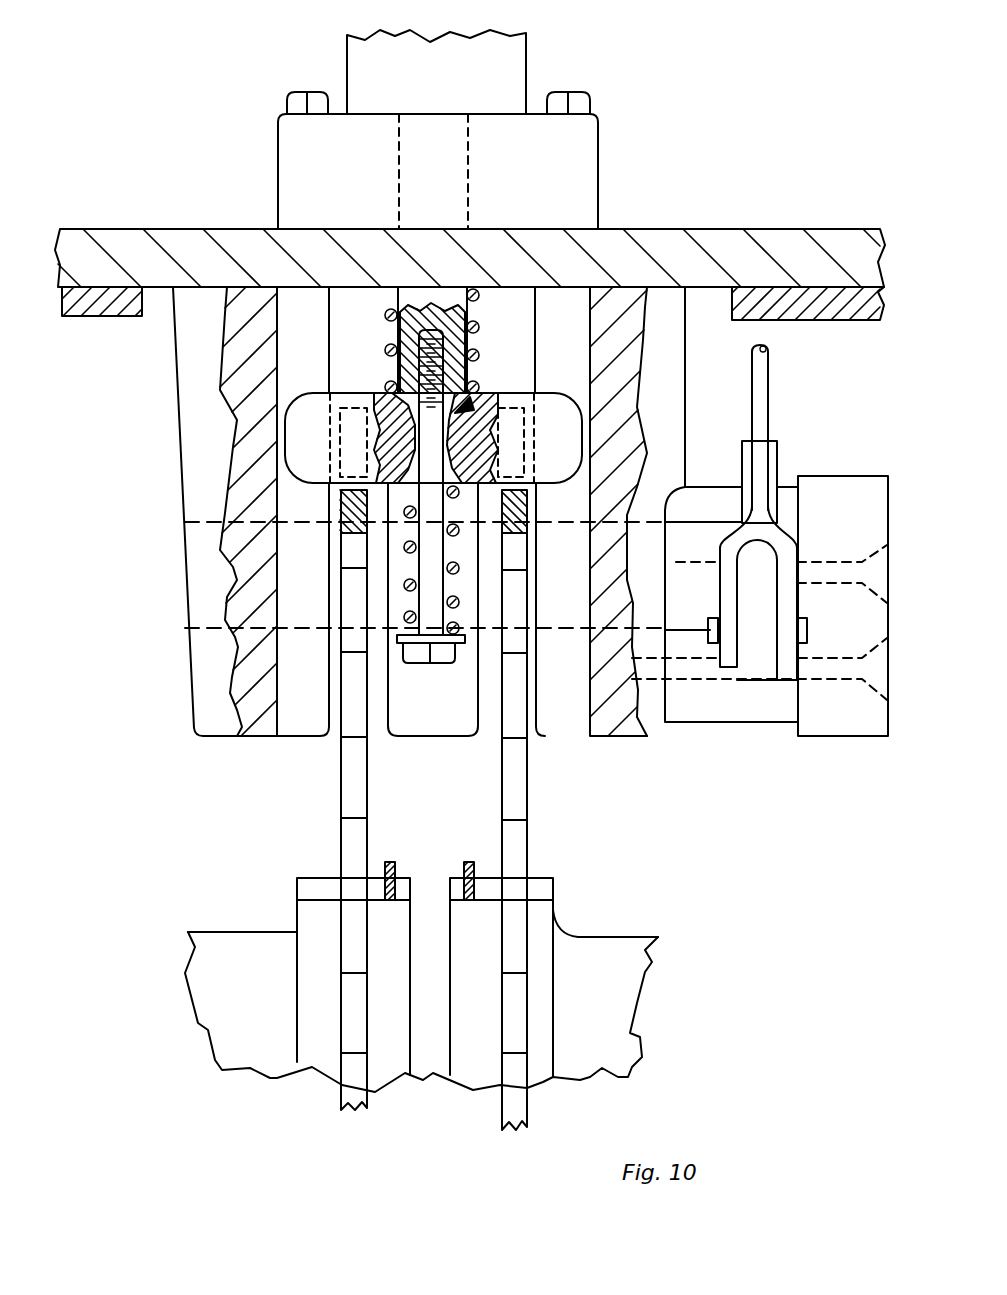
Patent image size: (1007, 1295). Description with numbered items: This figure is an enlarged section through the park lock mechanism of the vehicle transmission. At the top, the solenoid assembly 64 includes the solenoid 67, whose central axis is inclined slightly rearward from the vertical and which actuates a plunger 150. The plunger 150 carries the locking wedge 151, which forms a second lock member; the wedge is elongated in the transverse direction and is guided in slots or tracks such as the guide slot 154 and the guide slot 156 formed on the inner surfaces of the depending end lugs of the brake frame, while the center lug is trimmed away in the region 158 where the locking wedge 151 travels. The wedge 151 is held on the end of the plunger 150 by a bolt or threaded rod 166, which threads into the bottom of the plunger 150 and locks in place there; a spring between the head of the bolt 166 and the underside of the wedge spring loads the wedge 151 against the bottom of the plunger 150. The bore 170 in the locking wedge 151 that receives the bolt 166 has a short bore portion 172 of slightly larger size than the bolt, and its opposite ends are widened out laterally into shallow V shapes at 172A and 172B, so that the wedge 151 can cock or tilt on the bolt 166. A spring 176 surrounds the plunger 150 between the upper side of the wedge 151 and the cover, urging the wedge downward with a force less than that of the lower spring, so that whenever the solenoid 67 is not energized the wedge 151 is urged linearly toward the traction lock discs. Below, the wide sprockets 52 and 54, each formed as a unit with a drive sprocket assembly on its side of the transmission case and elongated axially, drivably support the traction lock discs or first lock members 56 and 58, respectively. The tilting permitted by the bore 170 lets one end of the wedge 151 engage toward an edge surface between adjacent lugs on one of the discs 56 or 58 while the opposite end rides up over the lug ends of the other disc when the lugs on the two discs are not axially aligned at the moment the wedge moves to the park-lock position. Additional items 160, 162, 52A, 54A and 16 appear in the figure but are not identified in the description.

The solenoid 67 is at (515, 55).
The solenoid assembly 64 is at (618, 139).
The guide slot 154 is at (295, 316).
The plunger 150 is at (420, 297).
The spring 176 is at (492, 318).
The guide slot 156 is at (565, 312).
The short bore portion 172 is at (376, 393).
The bore 170 is at (455, 426).
The widened bore end 172A is at (468, 410).
The locking wedge 151 is at (290, 436).
The bolt 166 is at (430, 573).
The widened bore end 172B is at (458, 484).
The housing body 160 is at (208, 689).
The central cavity 162 is at (413, 715).
The trimmed-away region 158 is at (648, 722).
The traction lock disc 58 is at (342, 788).
The right fastener 54A is at (470, 860).
The left fastener 52A is at (392, 860).
The traction lock disc 56 is at (515, 847).
The wide sprocket 52 is at (317, 932).
The frame member 16 is at (245, 942).
The wide sprocket 54 is at (545, 983).